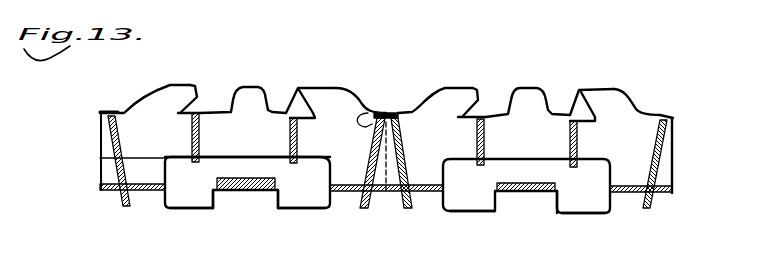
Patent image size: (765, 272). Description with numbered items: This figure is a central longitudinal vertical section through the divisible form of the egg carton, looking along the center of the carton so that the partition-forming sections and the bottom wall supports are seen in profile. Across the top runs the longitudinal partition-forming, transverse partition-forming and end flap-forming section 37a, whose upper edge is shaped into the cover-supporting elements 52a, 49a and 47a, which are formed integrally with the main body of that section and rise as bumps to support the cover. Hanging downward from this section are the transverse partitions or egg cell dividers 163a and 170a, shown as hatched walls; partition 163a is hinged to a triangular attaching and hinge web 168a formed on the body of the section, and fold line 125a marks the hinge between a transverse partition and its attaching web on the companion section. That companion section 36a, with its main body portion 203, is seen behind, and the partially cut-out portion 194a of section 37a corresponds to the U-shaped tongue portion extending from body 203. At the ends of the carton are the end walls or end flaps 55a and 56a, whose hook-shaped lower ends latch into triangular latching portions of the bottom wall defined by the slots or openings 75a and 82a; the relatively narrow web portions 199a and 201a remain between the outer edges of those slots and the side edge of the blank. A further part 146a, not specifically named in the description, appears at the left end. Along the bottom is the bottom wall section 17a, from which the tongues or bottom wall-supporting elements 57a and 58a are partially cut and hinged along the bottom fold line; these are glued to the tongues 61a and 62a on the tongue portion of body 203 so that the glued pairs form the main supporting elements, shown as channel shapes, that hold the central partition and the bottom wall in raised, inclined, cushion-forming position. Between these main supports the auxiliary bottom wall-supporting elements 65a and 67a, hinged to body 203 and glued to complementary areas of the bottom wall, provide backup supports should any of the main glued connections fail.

The longitudinal partition-forming, transverse partition-forming and end flap-formin 37a is at (133, 118).
The cover-supporting element 52a is at (168, 93).
The attaching and hinge web 168a is at (200, 113).
The cover-supporting element 49a is at (246, 95).
The fold line 125a is at (300, 88).
The cover-supporting element 47a is at (318, 95).
The transverse partition or egg cell divider 170a is at (297, 141).
The transverse partition or egg cell divider 163a is at (198, 142).
The end wall or end flap 55a is at (363, 112).
The end wall or end flap 56a is at (397, 132).
The main body portion 203 is at (388, 168).
The end post 146a is at (110, 113).
The slot or opening 75a is at (138, 192).
The web portion 199a is at (116, 191).
The slot or opening 82a is at (355, 193).
The web portion 201a is at (378, 196).
The tongue or bottom wall-supporting element 62a is at (197, 199).
The auxiliary bottom wall-supporting element 67a is at (473, 203).
The auxiliary bottom wall-supporting element 65a is at (240, 175).
The partially cut-out portion 194a is at (243, 158).
The longitudinal partition-forming, transverse partition-forming and end flap-formin 36a is at (185, 167).
The tongue or bottom wall-supporting element 58a is at (165, 208).
The bottom wall section 17a is at (250, 191).
The tongue or bottom wall-supporting element 57a is at (272, 212).
The tongue or bottom wall-supporting element 61a is at (312, 204).